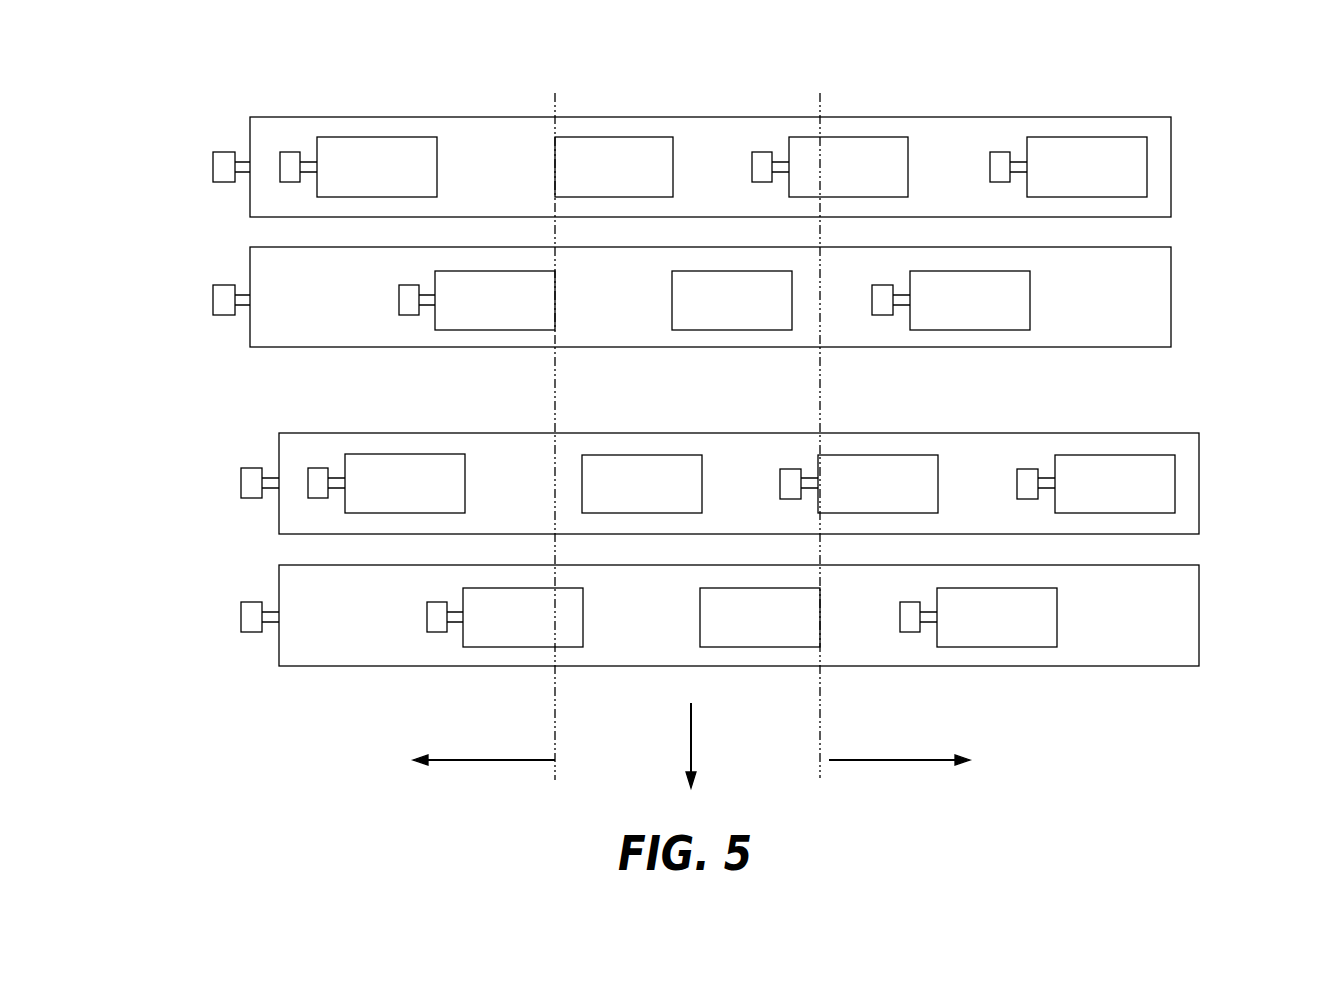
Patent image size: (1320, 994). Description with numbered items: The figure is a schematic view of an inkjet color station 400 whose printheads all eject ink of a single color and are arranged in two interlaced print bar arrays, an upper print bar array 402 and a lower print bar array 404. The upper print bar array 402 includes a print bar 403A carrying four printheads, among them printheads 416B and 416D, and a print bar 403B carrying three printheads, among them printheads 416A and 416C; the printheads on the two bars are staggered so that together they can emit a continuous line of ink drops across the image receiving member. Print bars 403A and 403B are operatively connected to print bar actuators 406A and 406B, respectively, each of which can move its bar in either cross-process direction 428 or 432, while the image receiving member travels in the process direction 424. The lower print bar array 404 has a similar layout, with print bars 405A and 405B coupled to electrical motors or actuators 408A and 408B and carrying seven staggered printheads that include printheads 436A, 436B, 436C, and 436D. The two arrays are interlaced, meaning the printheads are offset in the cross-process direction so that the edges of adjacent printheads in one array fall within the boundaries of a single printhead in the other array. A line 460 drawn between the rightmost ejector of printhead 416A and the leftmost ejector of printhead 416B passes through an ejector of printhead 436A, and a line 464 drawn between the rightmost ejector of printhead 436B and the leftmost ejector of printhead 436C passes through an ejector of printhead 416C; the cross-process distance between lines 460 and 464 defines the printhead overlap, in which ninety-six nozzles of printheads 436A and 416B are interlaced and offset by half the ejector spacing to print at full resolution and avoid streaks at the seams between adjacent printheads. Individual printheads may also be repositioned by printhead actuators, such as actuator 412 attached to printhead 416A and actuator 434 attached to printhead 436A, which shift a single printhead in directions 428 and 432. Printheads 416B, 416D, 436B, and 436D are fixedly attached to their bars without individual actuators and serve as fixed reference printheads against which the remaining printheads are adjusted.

The color station 400 is at (305, 52).
The print bar array 402 is at (1200, 231).
The print bar 403A is at (1171, 167).
The print bar 403B is at (1171, 297).
The print bar array 404 is at (1226, 553).
The print bar 405A is at (1199, 484).
The print bar 405B is at (1199, 614).
The print bar actuator 406A is at (223, 152).
The print bar actuator 406B is at (223, 285).
The print bar actuator 408A is at (251, 467).
The print bar actuator 408B is at (251, 601).
The printhead actuator 412 is at (398, 298).
The printhead 416A is at (495, 331).
The printhead 416B is at (612, 137).
The printhead 416C is at (733, 331).
The printhead 416D is at (850, 137).
The process direction 424 is at (692, 740).
The cross-process direction 428 is at (492, 760).
The cross-process direction 432 is at (900, 760).
The printhead actuator 434 is at (427, 617).
The printhead 436A is at (520, 648).
The printhead 436B is at (683, 455).
The printhead 436C is at (747, 647).
The printhead 436D is at (901, 455).
The line 460 is at (556, 727).
The line 464 is at (820, 727).